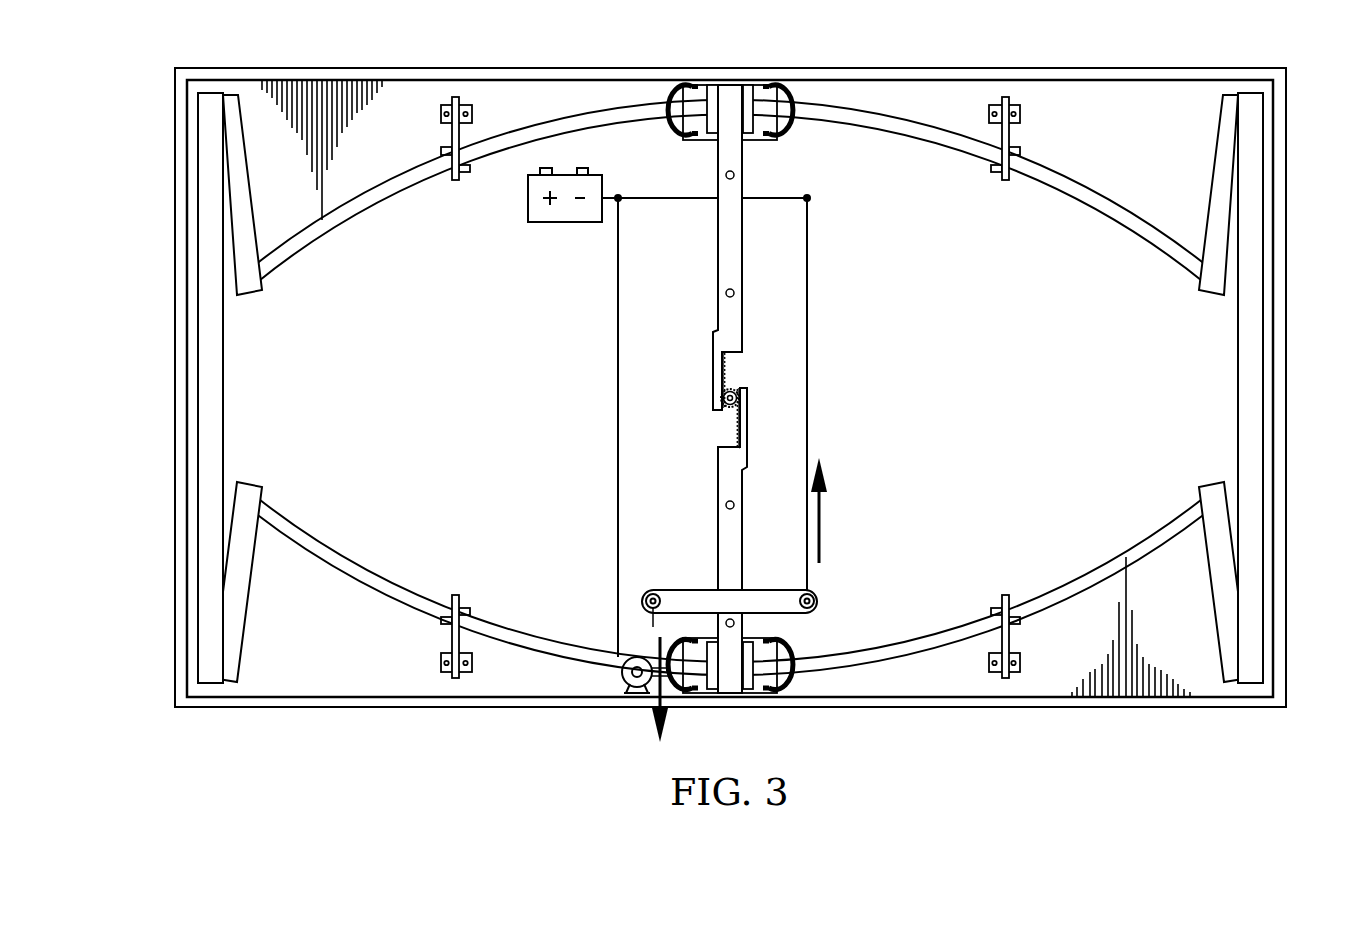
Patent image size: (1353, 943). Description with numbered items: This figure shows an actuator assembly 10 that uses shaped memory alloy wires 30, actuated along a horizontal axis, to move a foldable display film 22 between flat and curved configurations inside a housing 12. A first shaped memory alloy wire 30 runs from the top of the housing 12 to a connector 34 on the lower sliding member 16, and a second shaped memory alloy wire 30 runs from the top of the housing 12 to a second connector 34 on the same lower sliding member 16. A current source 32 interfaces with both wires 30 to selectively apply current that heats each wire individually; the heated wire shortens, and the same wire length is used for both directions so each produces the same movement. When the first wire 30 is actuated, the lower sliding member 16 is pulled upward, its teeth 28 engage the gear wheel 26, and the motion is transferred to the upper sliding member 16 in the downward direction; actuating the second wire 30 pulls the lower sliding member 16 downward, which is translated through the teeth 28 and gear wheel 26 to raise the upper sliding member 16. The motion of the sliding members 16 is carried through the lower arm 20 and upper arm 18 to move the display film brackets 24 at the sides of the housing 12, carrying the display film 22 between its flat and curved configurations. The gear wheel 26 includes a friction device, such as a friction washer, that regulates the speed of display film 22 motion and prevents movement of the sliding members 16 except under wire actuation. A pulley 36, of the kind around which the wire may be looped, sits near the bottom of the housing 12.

The display assembly 10 is at (133, 240).
The housing 12 is at (175, 577).
The sliding member 16 is at (730, 317).
The upper arm 18 is at (1118, 228).
The lower strut 20 is at (1078, 577).
The foldable display film 22 is at (441, 405).
The display film bracket 24 is at (205, 372).
The gear wheel 26 is at (728, 404).
The teeth 28 is at (722, 372).
The shaped memory alloy wire 30 is at (617, 435).
The current source 32 is at (528, 210).
The connector 34 is at (690, 590).
The pulley 36 is at (622, 683).